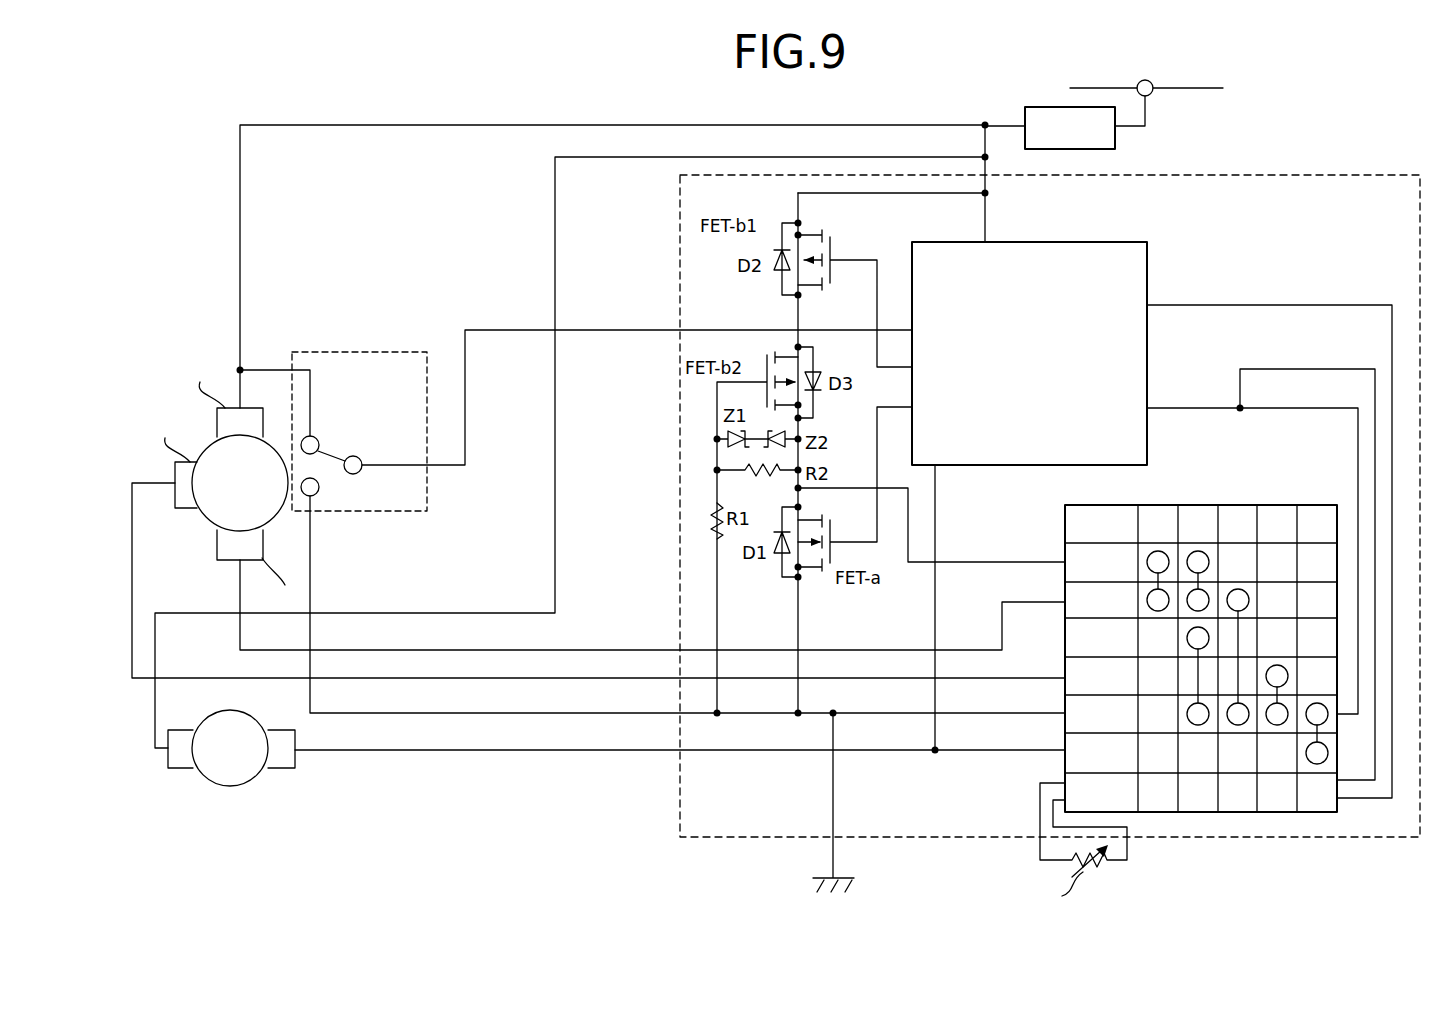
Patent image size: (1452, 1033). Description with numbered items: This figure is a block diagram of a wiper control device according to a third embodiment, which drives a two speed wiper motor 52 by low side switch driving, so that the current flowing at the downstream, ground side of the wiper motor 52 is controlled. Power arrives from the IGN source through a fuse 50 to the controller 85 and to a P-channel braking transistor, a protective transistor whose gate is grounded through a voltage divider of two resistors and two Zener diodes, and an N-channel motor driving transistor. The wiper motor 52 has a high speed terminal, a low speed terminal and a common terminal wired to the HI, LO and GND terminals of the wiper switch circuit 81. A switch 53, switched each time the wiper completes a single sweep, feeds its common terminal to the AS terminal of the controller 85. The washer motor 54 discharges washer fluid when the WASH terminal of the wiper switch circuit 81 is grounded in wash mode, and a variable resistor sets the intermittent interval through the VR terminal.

The fuse 50 is at (1045, 107).
The wiper motor 52 is at (278, 516).
The switch 53 is at (352, 352).
The washer motor 54 is at (256, 778).
The wiper switch circuit 81 is at (1205, 812).
The controller 85 is at (1112, 242).